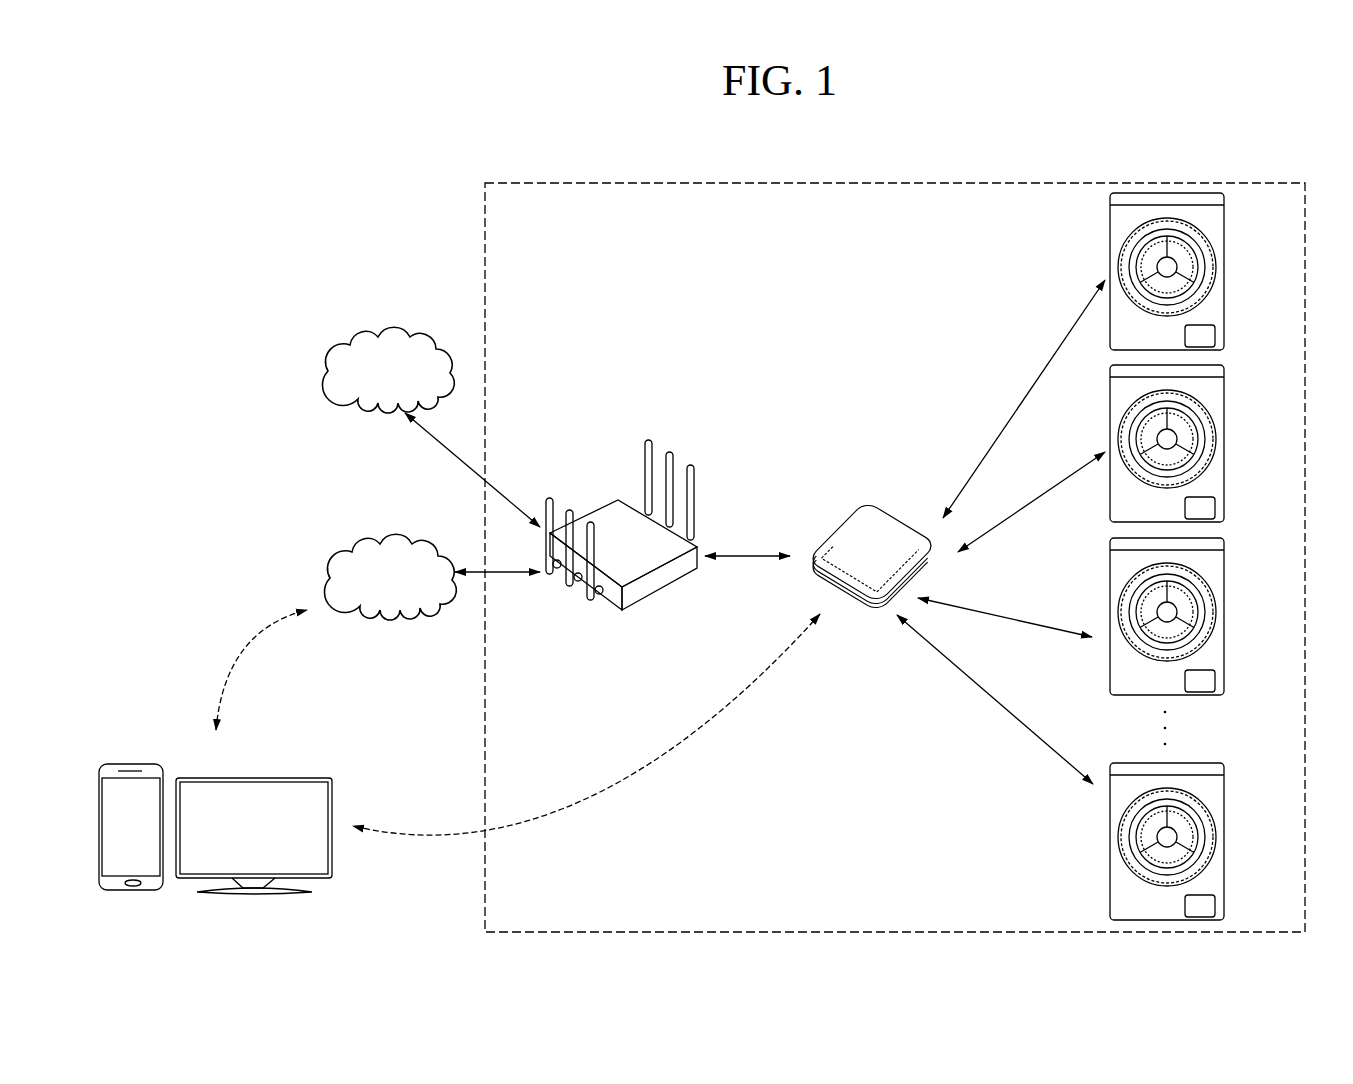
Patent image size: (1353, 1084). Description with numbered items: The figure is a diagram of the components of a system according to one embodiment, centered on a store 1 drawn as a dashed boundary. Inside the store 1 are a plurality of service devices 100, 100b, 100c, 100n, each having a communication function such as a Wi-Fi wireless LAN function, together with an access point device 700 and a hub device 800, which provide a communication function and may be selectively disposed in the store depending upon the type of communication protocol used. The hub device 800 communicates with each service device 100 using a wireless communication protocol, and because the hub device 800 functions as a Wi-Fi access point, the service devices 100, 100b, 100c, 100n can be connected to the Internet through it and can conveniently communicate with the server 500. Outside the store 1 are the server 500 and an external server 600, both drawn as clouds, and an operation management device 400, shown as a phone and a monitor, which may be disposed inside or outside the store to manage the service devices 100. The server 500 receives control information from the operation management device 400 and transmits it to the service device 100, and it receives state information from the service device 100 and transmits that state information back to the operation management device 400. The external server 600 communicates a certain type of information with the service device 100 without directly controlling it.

The store 1 is at (558, 183).
The service device 100 is at (1225, 267).
The service device 100b is at (1225, 440).
The service device 100c is at (1225, 612).
The service device 100n is at (1225, 836).
The operation management device 400 is at (163, 757).
The server 500 is at (345, 538).
The external server 600 is at (346, 332).
The access point device 700 is at (605, 497).
The hub device 800 is at (850, 513).